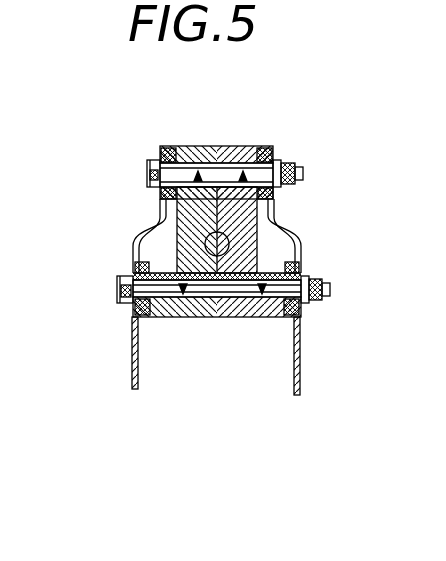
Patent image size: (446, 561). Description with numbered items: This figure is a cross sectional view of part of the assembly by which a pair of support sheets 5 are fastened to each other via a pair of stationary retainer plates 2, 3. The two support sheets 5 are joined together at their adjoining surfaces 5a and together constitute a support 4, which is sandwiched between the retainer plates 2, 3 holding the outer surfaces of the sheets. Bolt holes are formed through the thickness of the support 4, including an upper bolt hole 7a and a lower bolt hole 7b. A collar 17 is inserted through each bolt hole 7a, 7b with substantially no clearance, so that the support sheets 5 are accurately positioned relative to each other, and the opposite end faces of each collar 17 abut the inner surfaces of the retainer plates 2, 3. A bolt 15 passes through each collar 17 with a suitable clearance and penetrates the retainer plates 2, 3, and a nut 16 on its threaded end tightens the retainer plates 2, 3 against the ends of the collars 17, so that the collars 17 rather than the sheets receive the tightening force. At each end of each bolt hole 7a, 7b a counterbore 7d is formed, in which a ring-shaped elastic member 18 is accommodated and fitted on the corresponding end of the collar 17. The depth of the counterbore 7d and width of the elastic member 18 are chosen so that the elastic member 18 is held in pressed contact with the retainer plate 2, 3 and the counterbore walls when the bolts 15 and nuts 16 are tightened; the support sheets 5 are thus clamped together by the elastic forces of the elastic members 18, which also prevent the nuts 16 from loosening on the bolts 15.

The retainer plate 2 is at (132, 348).
The retainer plate 3 is at (300, 352).
The support 4 is at (150, 246).
The support sheet 5 is at (178, 238).
The adjoining surface 5a is at (250, 249).
The upper bolt hole 7a is at (163, 209).
The lower bolt hole 7b is at (134, 264).
The counterbore 7d is at (164, 192).
The bolt 15 is at (150, 172).
The nut 16 is at (284, 161).
The collar 17 is at (222, 147).
The elastic member 18 is at (172, 149).